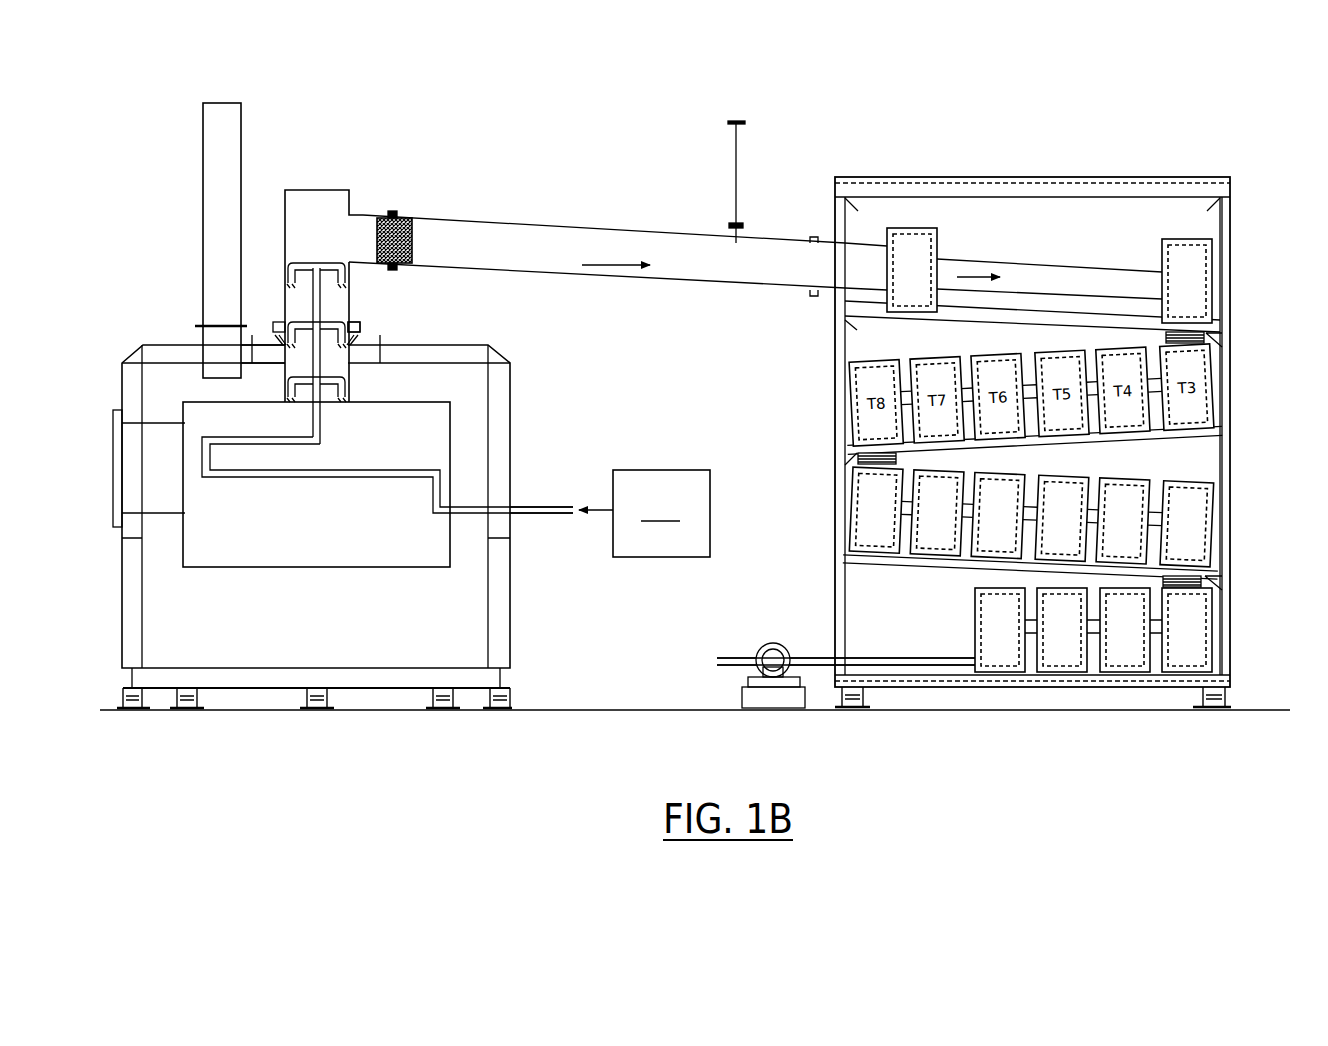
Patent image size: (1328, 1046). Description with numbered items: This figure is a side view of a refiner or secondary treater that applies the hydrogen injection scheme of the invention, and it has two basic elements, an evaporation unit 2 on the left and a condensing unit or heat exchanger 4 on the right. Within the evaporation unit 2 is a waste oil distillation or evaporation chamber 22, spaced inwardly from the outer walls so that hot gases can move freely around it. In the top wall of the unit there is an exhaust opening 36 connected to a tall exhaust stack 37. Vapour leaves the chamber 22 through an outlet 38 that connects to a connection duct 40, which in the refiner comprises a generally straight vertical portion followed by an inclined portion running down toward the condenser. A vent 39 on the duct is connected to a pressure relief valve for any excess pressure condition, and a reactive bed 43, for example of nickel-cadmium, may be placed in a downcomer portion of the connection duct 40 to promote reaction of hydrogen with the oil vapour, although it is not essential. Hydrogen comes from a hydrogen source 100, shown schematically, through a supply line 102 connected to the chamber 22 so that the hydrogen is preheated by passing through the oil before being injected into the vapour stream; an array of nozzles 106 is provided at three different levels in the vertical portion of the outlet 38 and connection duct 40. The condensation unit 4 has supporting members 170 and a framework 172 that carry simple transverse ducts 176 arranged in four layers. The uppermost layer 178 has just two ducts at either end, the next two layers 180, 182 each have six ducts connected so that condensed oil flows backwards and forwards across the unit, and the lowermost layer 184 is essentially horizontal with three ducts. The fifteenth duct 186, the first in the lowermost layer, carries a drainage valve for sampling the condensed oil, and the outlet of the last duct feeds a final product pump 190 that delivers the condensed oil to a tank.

The evaporation unit 2 is at (527, 608).
The condensing unit 4 is at (1247, 297).
The waste oil evaporation chamber 22 is at (305, 538).
The exhaust opening 36 is at (200, 337).
The exhaust stack 37 is at (220, 168).
The outlet 38 is at (358, 337).
The vent 39 is at (742, 175).
The connection duct 40 is at (461, 253).
The reactive bed 43 is at (403, 217).
The hydrogen source 100 is at (350, 380).
The supply line 102 is at (535, 505).
The array of nozzles 106 is at (350, 282).
The supporting members 170 is at (1223, 673).
The framework 172 is at (1230, 350).
The transverse ducts 176 is at (1190, 257).
The uppermost layer of ducts 178 is at (897, 307).
The second layer of ducts 180 is at (872, 418).
The third layer of ducts 182 is at (868, 527).
The lowermost layer of ducts 184 is at (1217, 583).
The fifteenth transverse duct 186 is at (1183, 670).
The final product pump 190 is at (770, 643).